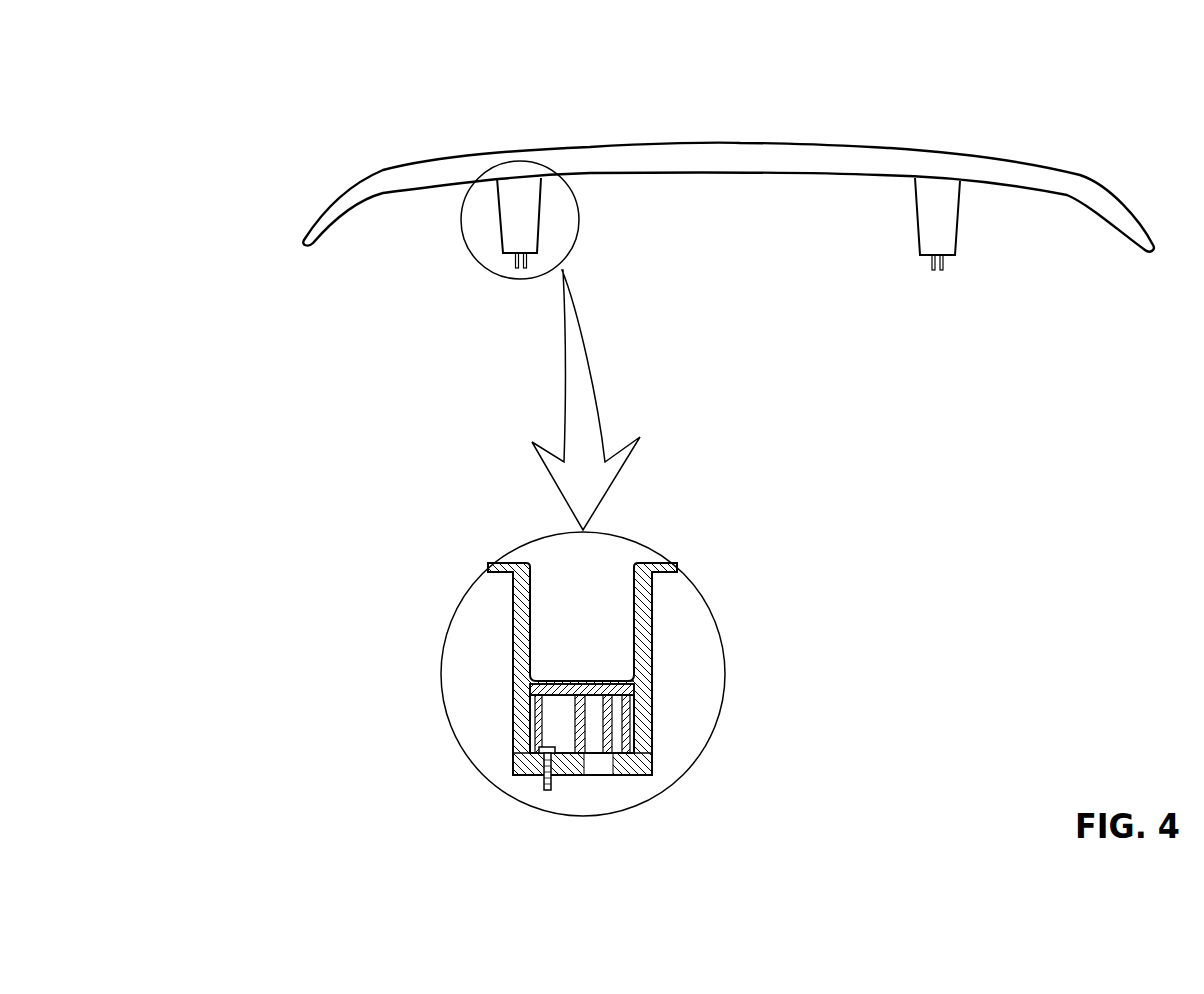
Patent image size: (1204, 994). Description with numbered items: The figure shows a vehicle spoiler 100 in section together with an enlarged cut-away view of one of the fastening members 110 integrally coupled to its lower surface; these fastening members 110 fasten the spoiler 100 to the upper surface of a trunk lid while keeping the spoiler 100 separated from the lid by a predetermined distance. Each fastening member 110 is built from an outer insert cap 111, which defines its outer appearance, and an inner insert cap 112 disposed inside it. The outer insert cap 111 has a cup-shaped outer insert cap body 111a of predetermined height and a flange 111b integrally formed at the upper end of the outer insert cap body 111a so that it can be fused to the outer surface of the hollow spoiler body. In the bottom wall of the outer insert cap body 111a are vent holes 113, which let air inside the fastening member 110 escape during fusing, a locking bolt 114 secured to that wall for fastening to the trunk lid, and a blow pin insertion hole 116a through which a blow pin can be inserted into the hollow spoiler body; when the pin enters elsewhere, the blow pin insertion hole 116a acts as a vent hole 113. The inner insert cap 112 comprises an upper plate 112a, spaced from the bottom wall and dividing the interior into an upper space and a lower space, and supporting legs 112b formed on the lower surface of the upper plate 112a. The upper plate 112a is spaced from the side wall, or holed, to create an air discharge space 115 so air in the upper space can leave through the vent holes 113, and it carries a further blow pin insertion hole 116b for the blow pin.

The spoiler 100 is at (772, 150).
The fastening member 110 is at (532, 218).
The outer insert cap 111 is at (827, 565).
The outer insert cap body 111a is at (653, 615).
The flange 111b is at (677, 569).
The inner insert cap 112 is at (287, 692).
The upper plate 112a is at (533, 686).
The supporting legs 112b is at (535, 735).
The vent holes 113 is at (618, 767).
The locking bolt 114 is at (546, 786).
The air discharge space 115 is at (633, 728).
The blow pin insertion hole 116a is at (596, 763).
The blow pin insertion hole 116b is at (602, 683).